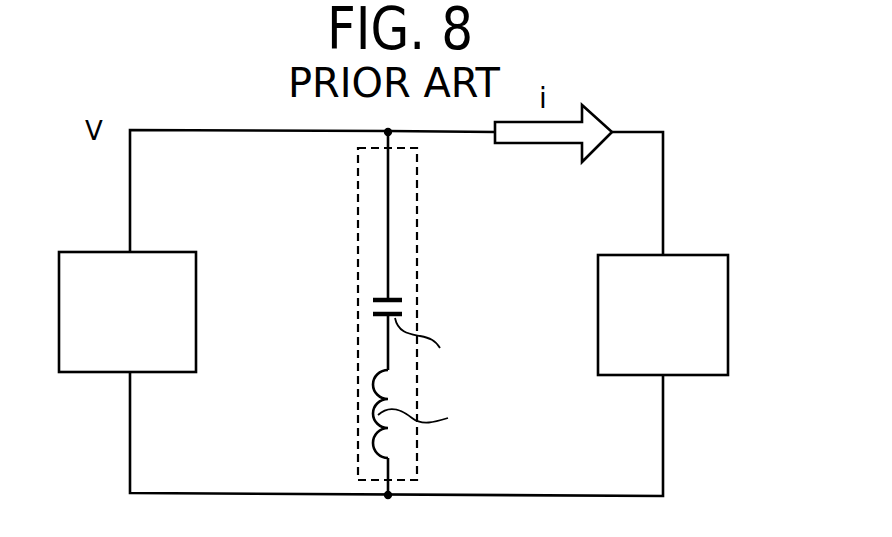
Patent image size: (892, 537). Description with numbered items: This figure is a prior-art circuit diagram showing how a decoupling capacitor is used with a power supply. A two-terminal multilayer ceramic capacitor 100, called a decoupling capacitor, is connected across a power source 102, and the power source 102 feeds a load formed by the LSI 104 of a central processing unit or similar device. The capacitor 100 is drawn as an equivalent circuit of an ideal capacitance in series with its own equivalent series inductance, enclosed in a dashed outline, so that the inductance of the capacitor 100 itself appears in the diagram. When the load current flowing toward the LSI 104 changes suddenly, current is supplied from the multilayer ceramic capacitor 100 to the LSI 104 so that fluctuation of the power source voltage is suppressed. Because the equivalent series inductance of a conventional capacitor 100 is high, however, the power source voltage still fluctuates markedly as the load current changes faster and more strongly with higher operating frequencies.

The multilayer ceramic capacitor 100 is at (417, 227).
The power source 102 is at (158, 252).
The LSI 104 is at (695, 255).